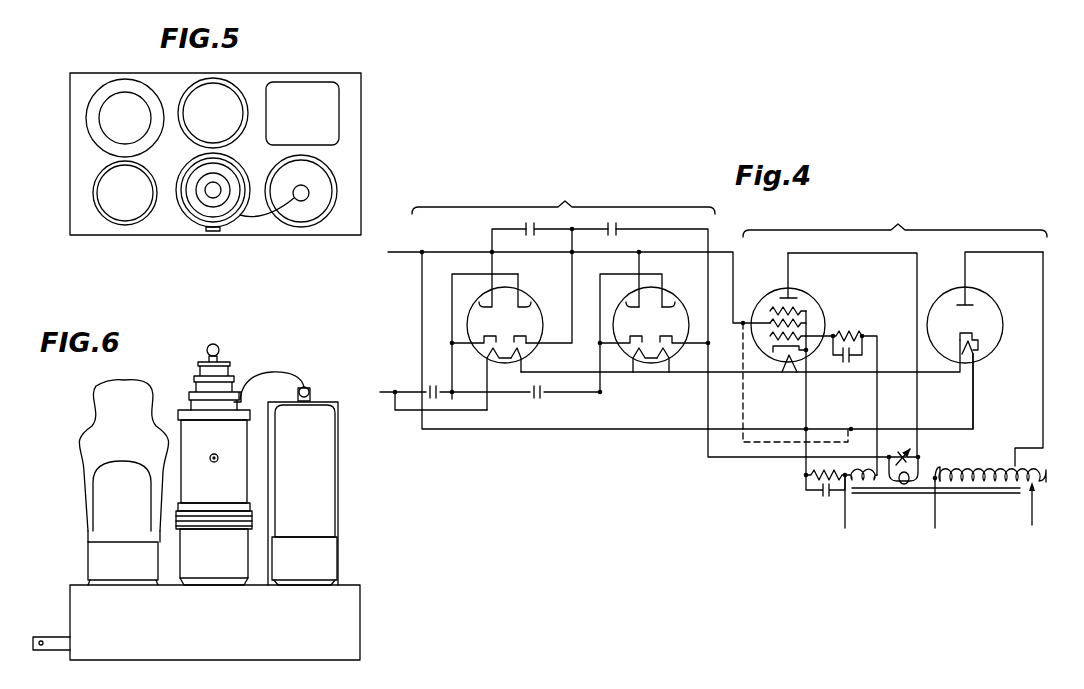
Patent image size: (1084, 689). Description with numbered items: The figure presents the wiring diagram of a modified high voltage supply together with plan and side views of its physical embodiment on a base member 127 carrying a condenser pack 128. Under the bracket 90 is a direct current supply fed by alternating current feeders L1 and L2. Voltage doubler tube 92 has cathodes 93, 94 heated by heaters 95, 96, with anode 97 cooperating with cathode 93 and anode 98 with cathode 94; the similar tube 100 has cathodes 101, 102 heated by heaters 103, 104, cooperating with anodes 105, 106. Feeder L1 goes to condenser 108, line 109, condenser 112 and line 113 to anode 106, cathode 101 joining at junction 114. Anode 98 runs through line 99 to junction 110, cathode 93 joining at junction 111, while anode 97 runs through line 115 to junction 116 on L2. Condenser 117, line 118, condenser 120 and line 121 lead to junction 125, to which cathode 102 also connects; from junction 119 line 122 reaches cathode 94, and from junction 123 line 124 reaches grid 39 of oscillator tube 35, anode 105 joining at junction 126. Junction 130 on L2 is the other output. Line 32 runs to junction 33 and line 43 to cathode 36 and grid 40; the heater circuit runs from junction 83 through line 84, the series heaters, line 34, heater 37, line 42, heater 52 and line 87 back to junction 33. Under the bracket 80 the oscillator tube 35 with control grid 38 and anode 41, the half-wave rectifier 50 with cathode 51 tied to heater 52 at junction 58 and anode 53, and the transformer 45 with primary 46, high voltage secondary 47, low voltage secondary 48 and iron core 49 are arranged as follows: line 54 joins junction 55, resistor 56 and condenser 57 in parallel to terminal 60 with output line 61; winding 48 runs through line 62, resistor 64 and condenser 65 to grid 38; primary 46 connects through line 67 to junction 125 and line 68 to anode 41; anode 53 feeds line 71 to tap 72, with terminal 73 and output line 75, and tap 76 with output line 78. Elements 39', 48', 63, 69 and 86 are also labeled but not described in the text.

In FIG. 4, the line 32 is at (518, 431).
In FIG. 4, the junction 33 is at (806, 429).
In FIG. 4, the line 34 is at (714, 374).
In FIG. 5, the oscillator tube 35 is at (112, 129).
In FIG. 6, the oscillator tube 35 is at (88, 444).
In FIG. 4, the oscillator tube 35 is at (817, 298).
In FIG. 4, the cathode 36 is at (780, 354).
In FIG. 4, the heater 37 is at (789, 363).
In FIG. 4, the control grid 38 is at (800, 336).
In FIG. 4, the grid 39 is at (793, 309).
In FIG. 4, the shield 39' is at (795, 382).
In FIG. 4, the grid 40 is at (796, 309).
In FIG. 4, the anode 41 is at (790, 296).
In FIG. 4, the line 42 is at (838, 373).
In FIG. 4, the line 43 is at (807, 404).
In FIG. 5, the transformer 45 is at (226, 226).
In FIG. 6, the transformer 45 is at (182, 399).
In FIG. 4, the transformer 45 is at (1047, 480).
In FIG. 4, the primary winding 46 is at (912, 477).
In FIG. 4, the high voltage secondary winding 47 is at (975, 470).
In FIG. 4, the low voltage secondary winding 48 is at (845, 493).
In FIG. 4, the conductor 48' is at (855, 416).
In FIG. 4, the iron core 49 is at (988, 507).
In FIG. 5, the half-wave rectifier tube 50 is at (306, 211).
In FIG. 6, the half-wave rectifier tube 50 is at (318, 507).
In FIG. 4, the half-wave rectifier tube 50 is at (998, 301).
In FIG. 4, the cathode 51 is at (973, 337).
In FIG. 4, the heater 52 is at (960, 347).
In FIG. 4, the anode 53 is at (969, 303).
In FIG. 4, the line 54 is at (806, 461).
In FIG. 4, the junction 55 is at (808, 477).
In FIG. 4, the voltage-regulating resistor 56 is at (840, 474).
In FIG. 4, the condenser 57 is at (826, 491).
In FIG. 4, the junction 58 is at (973, 351).
In FIG. 4, the common output terminal 60 is at (847, 469).
In FIG. 4, the common output line 61 is at (845, 521).
In FIG. 4, the line 62 is at (880, 347).
In FIG. 4, the junction 63 is at (862, 334).
In FIG. 4, the grid bias resistor 64 is at (852, 330).
In FIG. 4, the grid bias condenser 65 is at (841, 359).
In FIG. 4, the line 67 is at (732, 458).
In FIG. 4, the line 68 is at (879, 275).
In FIG. 4, the adjustable contact 69 is at (907, 446).
In FIG. 4, the line 71 is at (1044, 333).
In FIG. 4, the tap 72 is at (1020, 463).
In FIG. 4, the terminal 73 is at (940, 470).
In FIG. 4, the output line 75 is at (933, 528).
In FIG. 4, the tap 76 is at (1036, 487).
In FIG. 4, the output line 78 is at (1031, 528).
In FIG. 4, the bracket 80 is at (895, 222).
In FIG. 4, the junction 83 is at (396, 391).
In FIG. 4, the line 84 is at (452, 411).
In FIG. 4, the conductor 86 is at (552, 371).
In FIG. 4, the line 87 is at (895, 430).
In FIG. 4, the bracket 90 is at (563, 198).
In FIG. 5, the voltage doubler tube 92 is at (128, 206).
In FIG. 6, the voltage doubler tube 92 is at (110, 497).
In FIG. 4, the voltage doubler tube 92 is at (527, 299).
In FIG. 4, the cathode 93 is at (488, 336).
In FIG. 4, the cathode 94 is at (523, 328).
In FIG. 4, the heater 95 is at (490, 366).
In FIG. 4, the heater 96 is at (518, 366).
In FIG. 4, the anode 97 is at (486, 305).
In FIG. 4, the anode 98 is at (530, 310).
In FIG. 4, the line 99 is at (452, 296).
In FIG. 5, the voltage doubler tube 100 is at (228, 101).
In FIG. 4, the voltage doubler tube 100 is at (676, 297).
In FIG. 4, the cathode 101 is at (638, 338).
In FIG. 4, the cathode 102 is at (683, 329).
In FIG. 4, the heater 103 is at (638, 370).
In FIG. 4, the heater 104 is at (665, 370).
In FIG. 4, the anode 105 is at (631, 305).
In FIG. 4, the anode 106 is at (666, 308).
In FIG. 4, the condenser 108 is at (437, 391).
In FIG. 4, the line 109 is at (453, 398).
In FIG. 4, the junction 110 is at (453, 391).
In FIG. 4, the junction 111 is at (452, 341).
In FIG. 4, the condenser 112 is at (539, 392).
In FIG. 4, the line 113 is at (606, 276).
In FIG. 4, the junction 114 is at (600, 344).
In FIG. 4, the line 115 is at (496, 263).
In FIG. 4, the junction 116 is at (496, 251).
In FIG. 4, the condenser 117 is at (549, 236).
In FIG. 4, the line 118 is at (548, 229).
In FIG. 4, the junction 119 is at (577, 232).
In FIG. 4, the condenser 120 is at (612, 227).
In FIG. 4, the line 121 is at (621, 238).
In FIG. 4, the line 122 is at (574, 282).
In FIG. 4, the junction 123 is at (571, 255).
In FIG. 4, the line 124 is at (621, 251).
In FIG. 4, the junction 125 is at (710, 343).
In FIG. 4, the junction 126 is at (642, 254).
In FIG. 5, the base member 127 is at (364, 151).
In FIG. 6, the base member 127 is at (334, 616).
In FIG. 5, the condenser pack 128 is at (326, 109).
In FIG. 6, the condenser pack 128 is at (338, 408).
In FIG. 4, the junction 130 is at (423, 251).
In FIG. 4, the alternating current feeder L1 is at (484, 405).
In FIG. 4, the alternating current feeder L2 is at (576, 267).